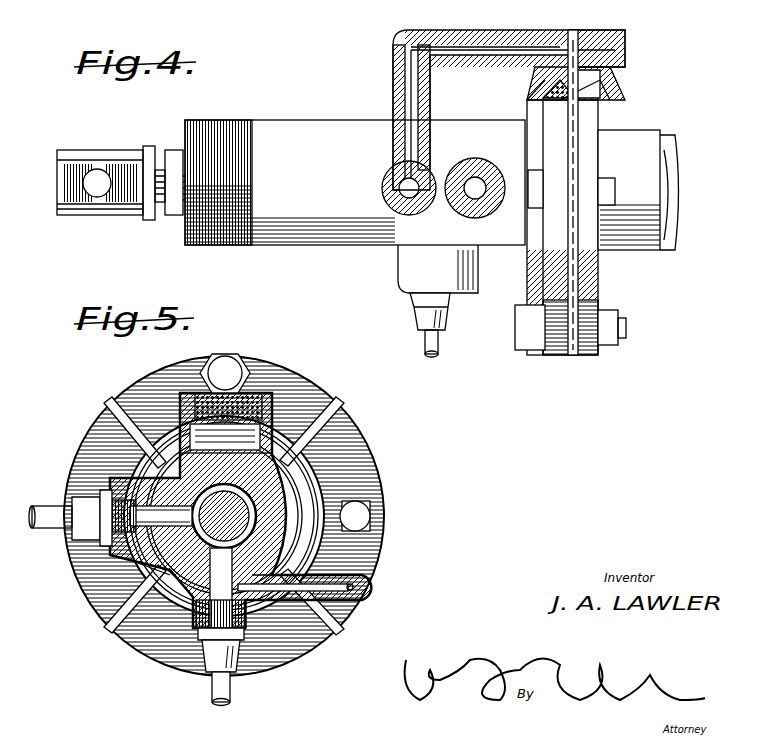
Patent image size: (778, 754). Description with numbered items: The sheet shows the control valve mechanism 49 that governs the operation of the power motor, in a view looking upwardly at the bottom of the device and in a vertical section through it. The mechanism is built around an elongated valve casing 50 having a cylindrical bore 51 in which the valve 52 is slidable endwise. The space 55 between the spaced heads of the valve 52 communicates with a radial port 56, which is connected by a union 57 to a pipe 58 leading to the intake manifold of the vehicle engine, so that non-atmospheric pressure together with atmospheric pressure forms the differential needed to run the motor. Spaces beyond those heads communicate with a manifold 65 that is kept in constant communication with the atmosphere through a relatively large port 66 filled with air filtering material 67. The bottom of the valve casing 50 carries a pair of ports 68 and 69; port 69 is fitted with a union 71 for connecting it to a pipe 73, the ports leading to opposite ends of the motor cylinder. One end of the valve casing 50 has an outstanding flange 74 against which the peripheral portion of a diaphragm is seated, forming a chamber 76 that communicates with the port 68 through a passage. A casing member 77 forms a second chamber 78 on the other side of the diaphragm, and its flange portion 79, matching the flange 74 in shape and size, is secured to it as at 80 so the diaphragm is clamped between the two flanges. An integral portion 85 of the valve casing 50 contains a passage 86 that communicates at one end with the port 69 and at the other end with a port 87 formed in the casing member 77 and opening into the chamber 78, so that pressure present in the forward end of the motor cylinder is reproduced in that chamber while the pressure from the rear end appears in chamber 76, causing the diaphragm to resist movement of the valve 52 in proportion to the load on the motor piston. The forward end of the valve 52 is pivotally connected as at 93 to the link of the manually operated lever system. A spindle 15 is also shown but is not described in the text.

In FIG. 4, the spindle 15 is at (572, 150).
In FIG. 4, the valve mechanism 49 is at (256, 116).
In FIG. 5, the valve mechanism 49 is at (337, 393).
In FIG. 4, the valve casing 50 is at (296, 125).
In FIG. 5, the valve casing 50 is at (282, 478).
In FIG. 5, the cylindrical bore 51 is at (290, 497).
In FIG. 4, the valve 52 is at (172, 145).
In FIG. 5, the valve 52 is at (165, 563).
In FIG. 5, the space between heads 55 is at (292, 528).
In FIG. 5, the radial port 56 is at (142, 500).
In FIG. 4, the union 57 is at (448, 325).
In FIG. 5, the union 57 is at (86, 500).
In FIG. 4, the pipe 58 is at (440, 348).
In FIG. 5, the pipe 58 is at (42, 506).
In FIG. 5, the manifold 65 is at (272, 420).
In FIG. 5, the port 66 is at (192, 412).
In FIG. 5, the air filtering material 67 is at (205, 386).
In FIG. 4, the port 68 is at (480, 176).
In FIG. 4, the port 69 is at (396, 172).
In FIG. 5, the port 69 is at (210, 585).
In FIG. 5, the union 71 is at (214, 652).
In FIG. 5, the pipe 73 is at (212, 690).
In FIG. 4, the outstanding flange 74 is at (553, 352).
In FIG. 5, the outstanding flange 74 is at (352, 455).
In FIG. 4, the chamber 76 is at (542, 93).
In FIG. 4, the casing member 77 is at (616, 100).
In FIG. 4, the second chamber 78 is at (606, 82).
In FIG. 4, the flange portion 79 is at (588, 352).
In FIG. 5, the securing means 80 is at (372, 517).
In FIG. 4, the integral portion 85 is at (433, 30).
In FIG. 5, the integral portion 85 is at (338, 600).
In FIG. 4, the passage 86 is at (476, 46).
In FIG. 5, the passage 86 is at (310, 600).
In FIG. 4, the port 87 is at (618, 74).
In FIG. 4, the pivotal connection 93 is at (97, 170).